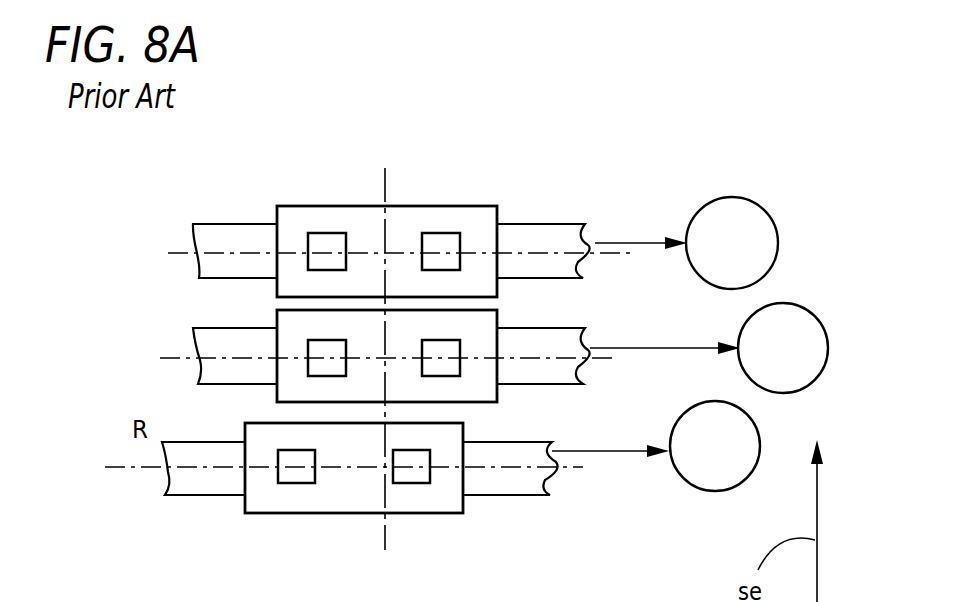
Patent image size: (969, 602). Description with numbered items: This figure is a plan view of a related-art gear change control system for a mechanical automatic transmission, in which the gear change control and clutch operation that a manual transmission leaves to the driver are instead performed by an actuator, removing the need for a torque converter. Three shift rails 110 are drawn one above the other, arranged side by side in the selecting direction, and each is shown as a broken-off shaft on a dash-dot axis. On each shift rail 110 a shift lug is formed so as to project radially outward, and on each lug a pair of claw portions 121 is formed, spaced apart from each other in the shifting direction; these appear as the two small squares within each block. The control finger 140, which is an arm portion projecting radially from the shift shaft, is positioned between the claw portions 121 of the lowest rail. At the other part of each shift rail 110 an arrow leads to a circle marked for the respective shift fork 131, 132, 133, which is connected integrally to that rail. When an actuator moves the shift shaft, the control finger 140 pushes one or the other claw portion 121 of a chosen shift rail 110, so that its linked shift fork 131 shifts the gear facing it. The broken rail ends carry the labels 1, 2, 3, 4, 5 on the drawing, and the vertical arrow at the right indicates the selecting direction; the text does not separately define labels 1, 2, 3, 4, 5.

The right end of rail / beam 1 is at (561, 430).
The beam 2 is at (550, 235).
The beam 3 is at (550, 343).
The beam 4 is at (227, 235).
The beam 5 is at (227, 343).
The shift rail 110 is at (510, 507).
The claw portion 121 is at (293, 486).
The shift fork 131 is at (656, 446).
The shift fork 132 is at (709, 348).
The shift fork 133 is at (686, 243).
The control finger 140 is at (321, 492).